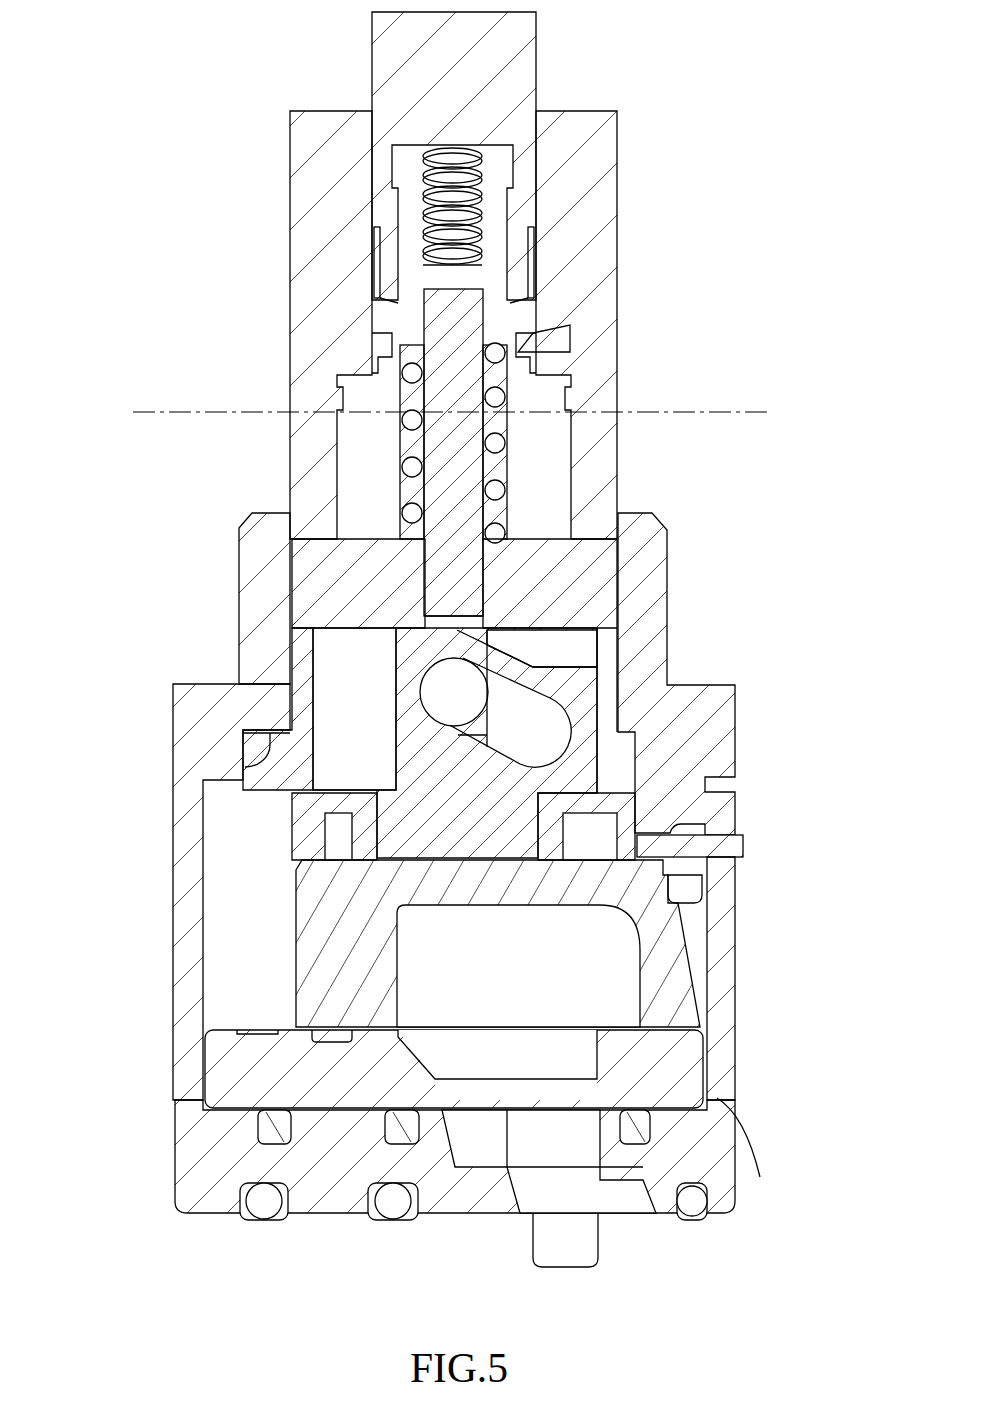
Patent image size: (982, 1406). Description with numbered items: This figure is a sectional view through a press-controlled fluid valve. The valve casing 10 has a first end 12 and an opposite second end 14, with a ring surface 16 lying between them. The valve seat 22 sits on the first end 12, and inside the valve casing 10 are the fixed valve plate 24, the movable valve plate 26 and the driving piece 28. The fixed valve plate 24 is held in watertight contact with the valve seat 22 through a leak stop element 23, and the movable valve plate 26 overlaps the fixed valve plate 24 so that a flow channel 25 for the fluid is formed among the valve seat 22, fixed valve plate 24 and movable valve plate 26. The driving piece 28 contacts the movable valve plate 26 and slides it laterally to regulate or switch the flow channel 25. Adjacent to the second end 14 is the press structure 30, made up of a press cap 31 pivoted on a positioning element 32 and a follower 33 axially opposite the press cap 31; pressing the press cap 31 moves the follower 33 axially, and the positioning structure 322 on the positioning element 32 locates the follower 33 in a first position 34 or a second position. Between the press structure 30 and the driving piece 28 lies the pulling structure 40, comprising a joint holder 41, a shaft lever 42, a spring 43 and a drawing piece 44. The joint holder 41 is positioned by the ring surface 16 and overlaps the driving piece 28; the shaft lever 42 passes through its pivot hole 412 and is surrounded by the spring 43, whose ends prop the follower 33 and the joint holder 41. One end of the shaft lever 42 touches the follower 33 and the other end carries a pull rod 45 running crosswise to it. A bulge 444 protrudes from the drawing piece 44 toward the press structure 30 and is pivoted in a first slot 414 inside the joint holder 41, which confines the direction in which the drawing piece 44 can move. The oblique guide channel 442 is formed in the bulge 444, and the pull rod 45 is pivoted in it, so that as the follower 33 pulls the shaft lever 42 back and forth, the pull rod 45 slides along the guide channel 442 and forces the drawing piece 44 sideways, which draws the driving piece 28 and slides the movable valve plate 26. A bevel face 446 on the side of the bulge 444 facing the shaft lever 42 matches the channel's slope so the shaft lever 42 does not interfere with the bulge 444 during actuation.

The valve casing 10 is at (444, 975).
The first end 12 is at (755, 1153).
The second end 14 is at (270, 512).
The ring surface 16 is at (243, 767).
The valve seat 22 is at (205, 1177).
The leak stop element 23 is at (270, 1120).
The fixed valve plate 24 is at (243, 1070).
The flow channel 25 is at (598, 982).
The movable valve plate 26 is at (459, 943).
The driving piece 28 is at (300, 828).
The press structure 30 is at (373, 348).
The press cap 31 is at (385, 75).
The positioning element 32 is at (315, 252).
The positioning structure 322 is at (397, 303).
The follower 33 is at (385, 373).
The first position 34 is at (183, 410).
The pulling structure 40 is at (471, 578).
The joint holder 41 is at (440, 582).
The pivot hole 412 is at (433, 622).
The first slot 414 is at (352, 700).
The shaft lever 42 is at (460, 328).
The spring 43 is at (505, 447).
The drawing piece 44 is at (471, 690).
The guide channel 442 is at (552, 733).
The bulge 444 is at (583, 709).
The bevel face 446 is at (518, 657).
The pull rod 45 is at (463, 698).